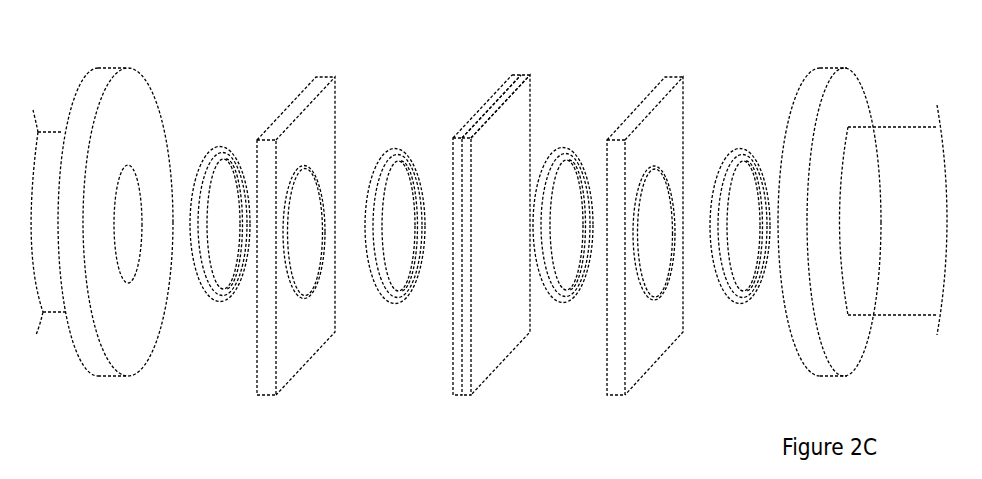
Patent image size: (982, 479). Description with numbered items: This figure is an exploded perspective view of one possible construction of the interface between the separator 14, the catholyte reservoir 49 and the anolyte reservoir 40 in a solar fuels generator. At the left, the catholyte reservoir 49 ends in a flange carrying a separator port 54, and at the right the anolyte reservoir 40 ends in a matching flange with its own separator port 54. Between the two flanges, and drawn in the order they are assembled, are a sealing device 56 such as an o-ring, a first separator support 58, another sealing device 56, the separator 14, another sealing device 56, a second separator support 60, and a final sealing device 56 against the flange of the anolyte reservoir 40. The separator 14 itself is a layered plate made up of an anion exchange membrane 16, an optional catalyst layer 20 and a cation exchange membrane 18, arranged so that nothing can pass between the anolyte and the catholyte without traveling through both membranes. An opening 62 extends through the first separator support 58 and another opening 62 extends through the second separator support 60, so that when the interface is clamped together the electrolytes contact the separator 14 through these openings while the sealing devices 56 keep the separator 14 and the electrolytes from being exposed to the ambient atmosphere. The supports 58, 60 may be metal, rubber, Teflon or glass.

The separator 14 is at (480, 218).
The anion exchange membrane 16 is at (500, 212).
The cation exchange membrane 18 is at (480, 108).
The catalyst layer 20 is at (496, 235).
The anolyte reservoir 40 is at (906, 113).
The catholyte reservoir 49 is at (56, 88).
The separator port 54 is at (150, 152).
The sealing device 56 is at (217, 300).
The first separator support 58 is at (327, 75).
The second separator support 60 is at (670, 73).
The opening 62 is at (310, 167).